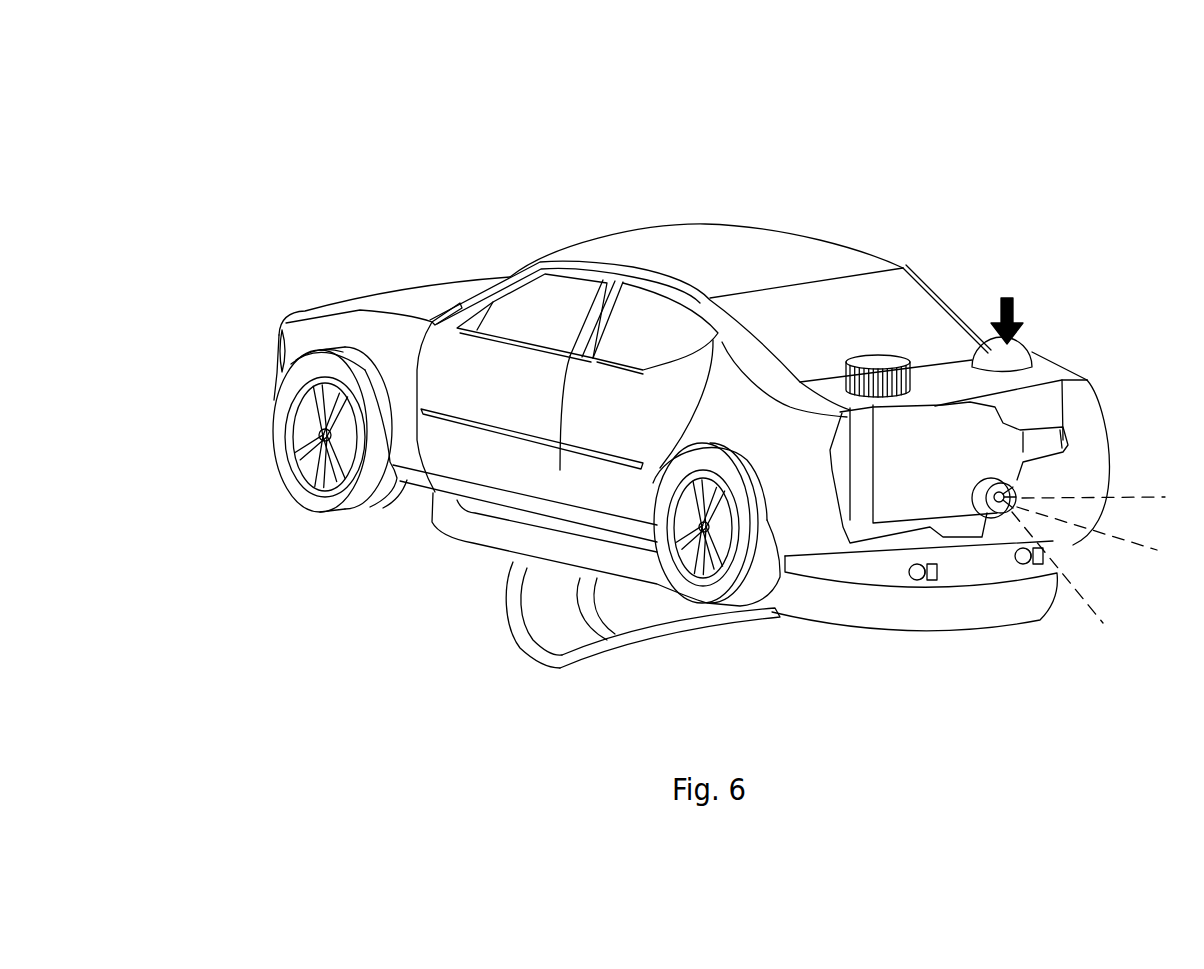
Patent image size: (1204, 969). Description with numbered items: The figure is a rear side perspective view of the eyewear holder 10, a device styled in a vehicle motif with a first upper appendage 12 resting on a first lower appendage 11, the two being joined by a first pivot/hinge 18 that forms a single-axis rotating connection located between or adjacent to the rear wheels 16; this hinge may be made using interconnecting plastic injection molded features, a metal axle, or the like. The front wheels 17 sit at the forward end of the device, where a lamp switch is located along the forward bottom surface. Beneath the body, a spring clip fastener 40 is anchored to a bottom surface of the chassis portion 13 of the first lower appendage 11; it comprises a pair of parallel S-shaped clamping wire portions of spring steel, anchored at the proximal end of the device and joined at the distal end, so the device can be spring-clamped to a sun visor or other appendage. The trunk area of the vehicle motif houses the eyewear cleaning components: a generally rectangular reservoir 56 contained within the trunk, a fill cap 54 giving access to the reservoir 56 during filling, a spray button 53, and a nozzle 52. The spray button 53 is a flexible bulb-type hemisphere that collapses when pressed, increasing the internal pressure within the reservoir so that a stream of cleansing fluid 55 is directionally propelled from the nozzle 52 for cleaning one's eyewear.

The eyewear holder 10 is at (270, 142).
The first lower appendage 11 is at (329, 294).
The first upper appendage 12 is at (833, 223).
The chassis portion 13 is at (850, 607).
The rear wheels 16 is at (698, 600).
The front wheels 17 is at (313, 500).
The first pivot/hinge 18 is at (1022, 558).
The spring clip fastener 40 is at (592, 610).
The nozzle 52 is at (1015, 485).
The spray button 53 is at (1015, 357).
The fill cap 54 is at (872, 366).
The cleansing fluid 55 is at (1115, 540).
The reservoir 56 is at (980, 452).